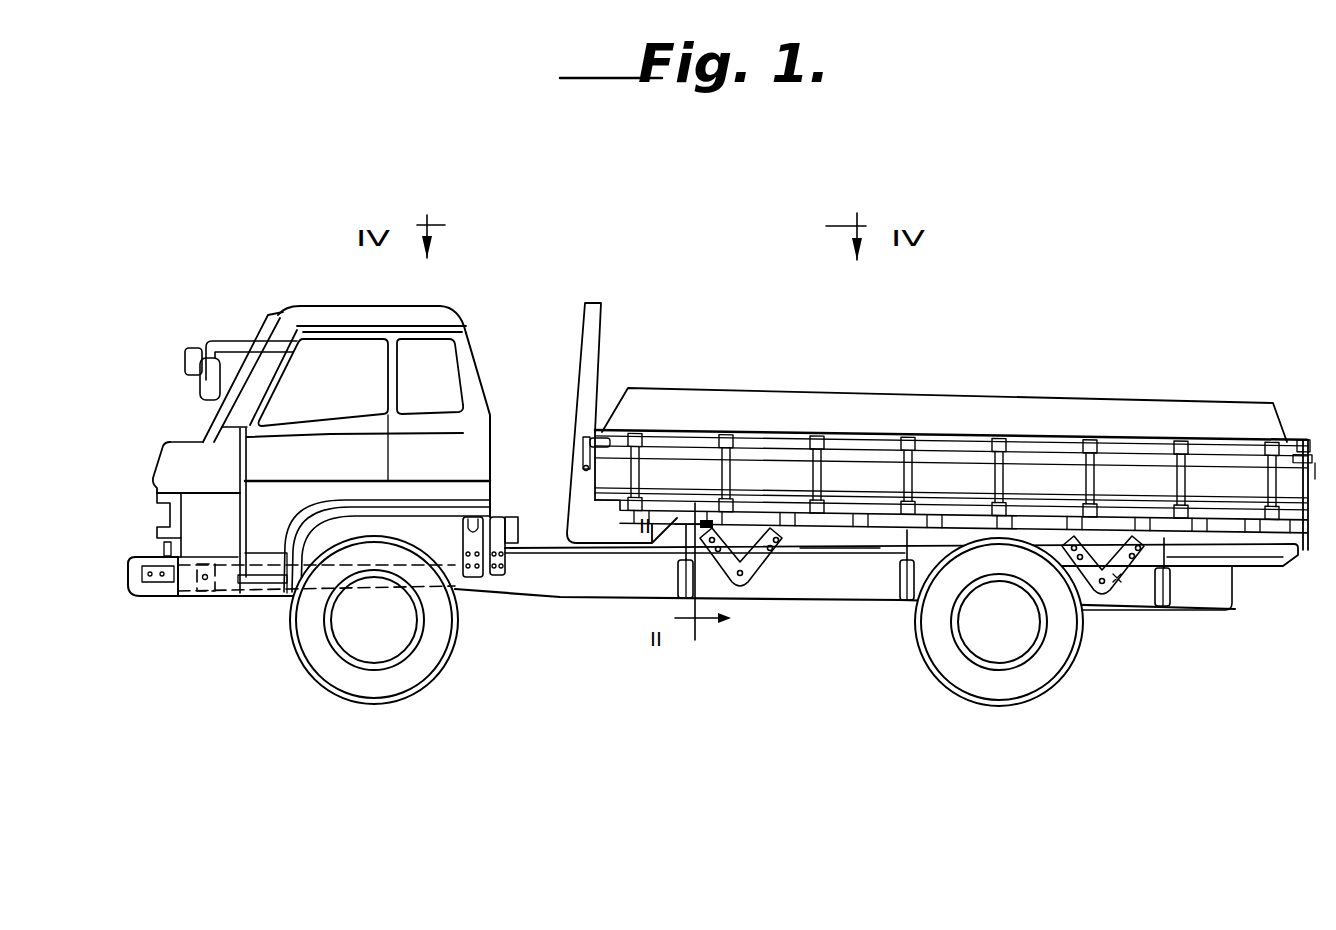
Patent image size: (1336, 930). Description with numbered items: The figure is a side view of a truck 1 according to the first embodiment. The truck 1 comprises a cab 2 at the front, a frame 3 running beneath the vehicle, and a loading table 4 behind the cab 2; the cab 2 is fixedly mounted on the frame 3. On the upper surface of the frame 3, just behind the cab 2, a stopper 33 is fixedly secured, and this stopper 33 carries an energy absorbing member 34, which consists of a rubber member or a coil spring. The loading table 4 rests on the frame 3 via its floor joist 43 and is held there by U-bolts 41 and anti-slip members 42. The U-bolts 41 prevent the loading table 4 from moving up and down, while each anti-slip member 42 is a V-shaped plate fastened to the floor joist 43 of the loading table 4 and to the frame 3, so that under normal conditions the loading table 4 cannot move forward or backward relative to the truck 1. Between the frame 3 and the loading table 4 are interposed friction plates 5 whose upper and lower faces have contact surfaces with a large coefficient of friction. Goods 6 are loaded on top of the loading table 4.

The truck 1 is at (822, 327).
The cab 2 is at (406, 286).
The frame 3 is at (878, 596).
The loading table 4 is at (798, 436).
The friction plates 5 is at (635, 550).
The goods 6 is at (1012, 406).
The stopper 33 is at (499, 517).
The energy absorbing member 34 is at (513, 523).
The U-bolts 41 is at (677, 578).
The anti-slip members 42 is at (756, 569).
The floor joist 43 is at (840, 542).